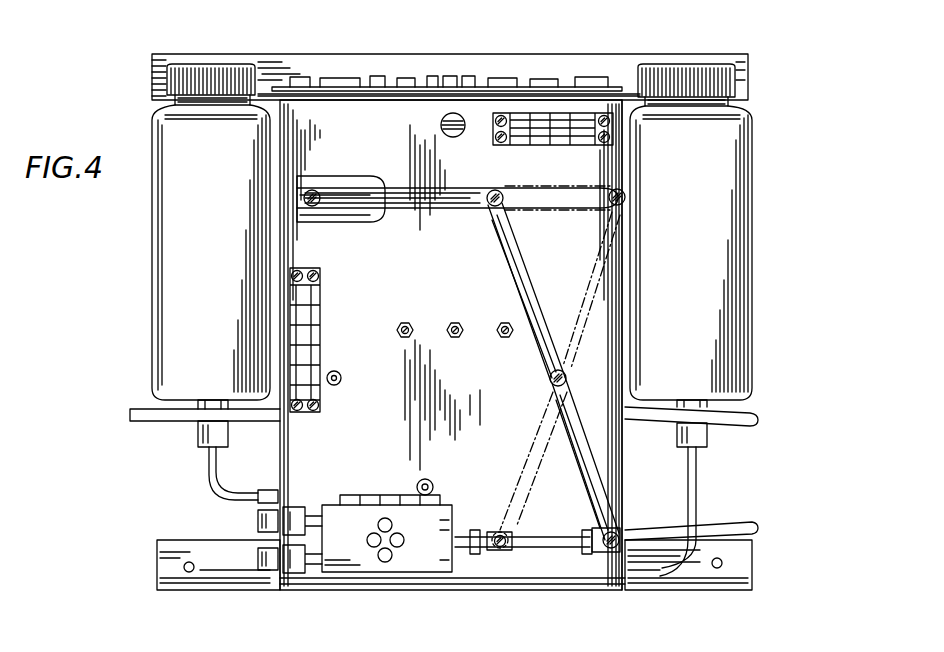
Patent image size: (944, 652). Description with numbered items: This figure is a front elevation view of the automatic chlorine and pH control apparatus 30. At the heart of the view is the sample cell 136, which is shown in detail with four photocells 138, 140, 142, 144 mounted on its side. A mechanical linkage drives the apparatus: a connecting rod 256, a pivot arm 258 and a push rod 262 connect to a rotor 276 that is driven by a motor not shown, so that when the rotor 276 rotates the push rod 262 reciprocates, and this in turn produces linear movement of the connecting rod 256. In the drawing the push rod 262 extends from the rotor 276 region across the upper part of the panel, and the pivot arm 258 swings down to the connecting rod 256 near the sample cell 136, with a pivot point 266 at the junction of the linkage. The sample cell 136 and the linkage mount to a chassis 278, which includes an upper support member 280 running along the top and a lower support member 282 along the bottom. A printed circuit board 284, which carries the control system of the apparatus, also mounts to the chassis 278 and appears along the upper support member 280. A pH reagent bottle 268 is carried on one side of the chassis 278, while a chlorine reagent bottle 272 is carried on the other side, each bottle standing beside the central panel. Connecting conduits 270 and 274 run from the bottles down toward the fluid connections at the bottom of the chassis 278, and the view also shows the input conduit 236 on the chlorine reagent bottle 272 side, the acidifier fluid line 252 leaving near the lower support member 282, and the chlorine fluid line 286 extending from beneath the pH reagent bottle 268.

The automatic chlorine and pH control apparatus 30 is at (614, 46).
The sample cell 136 is at (452, 556).
The photocell 138 is at (385, 518).
The photocell 140 is at (402, 547).
The photocell 142 is at (385, 562).
The photocell 144 is at (372, 547).
The input conduit 236 is at (133, 414).
The acidifier fluid line 252 is at (757, 530).
The connecting rod 256 is at (555, 548).
The pivot arm 258 is at (593, 468).
The push rod 262 is at (457, 205).
The pivot screw 266 is at (560, 377).
The pH reagent bottle 268 is at (752, 272).
The connecting conduit 270 is at (698, 498).
The chlorine reagent bottle 272 is at (170, 342).
The connecting conduit 274 is at (205, 460).
The rotor 276 is at (340, 186).
The chassis 278 is at (280, 462).
The upper support member 280 is at (750, 88).
The lower support member 282 is at (752, 577).
The printed circuit board 284 is at (500, 86).
The chlorine fluid line 286 is at (752, 410).